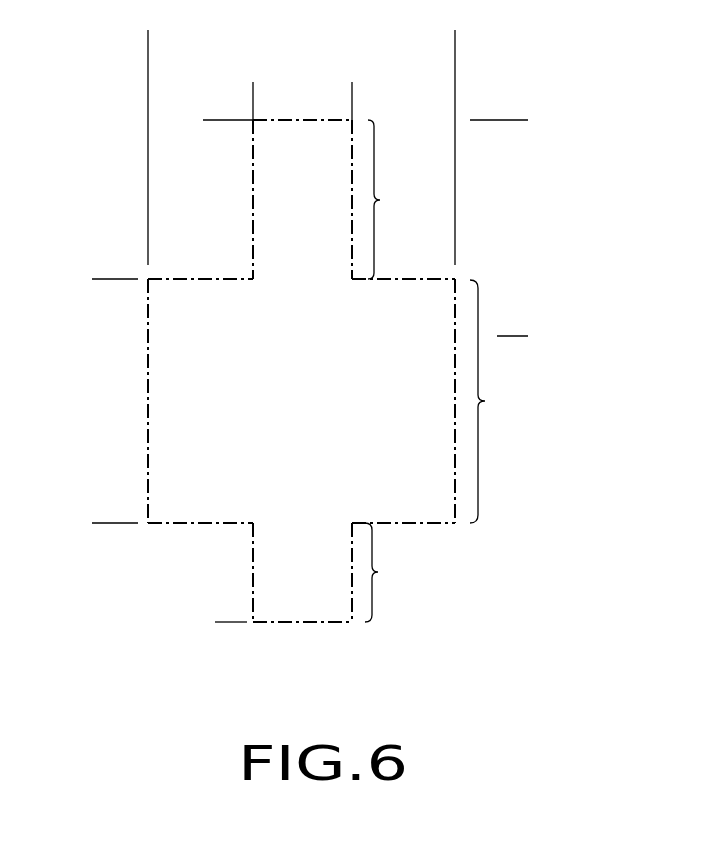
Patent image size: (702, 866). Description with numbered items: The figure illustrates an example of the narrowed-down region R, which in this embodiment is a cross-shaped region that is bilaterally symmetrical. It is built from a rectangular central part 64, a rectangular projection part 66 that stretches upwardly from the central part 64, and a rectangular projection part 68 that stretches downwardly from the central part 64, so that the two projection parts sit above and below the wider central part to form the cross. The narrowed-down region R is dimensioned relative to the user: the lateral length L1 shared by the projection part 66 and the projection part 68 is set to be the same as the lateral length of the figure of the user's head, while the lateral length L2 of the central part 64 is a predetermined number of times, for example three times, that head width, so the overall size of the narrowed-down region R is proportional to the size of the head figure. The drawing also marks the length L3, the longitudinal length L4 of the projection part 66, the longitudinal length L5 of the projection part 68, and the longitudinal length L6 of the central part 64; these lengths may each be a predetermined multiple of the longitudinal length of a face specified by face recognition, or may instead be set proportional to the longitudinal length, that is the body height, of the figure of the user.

The central part 64 is at (493, 401).
The projection part 66 is at (390, 199).
The projection part 68 is at (387, 572).
The narrowed-down region R is at (430, 524).
The lateral length L1 is at (352, 90).
The lateral length L2 is at (455, 38).
The length L3 is at (520, 120).
The longitudinal length L4 is at (208, 120).
The longitudinal length L5 is at (219, 523).
The longitudinal length L6 is at (97, 279).